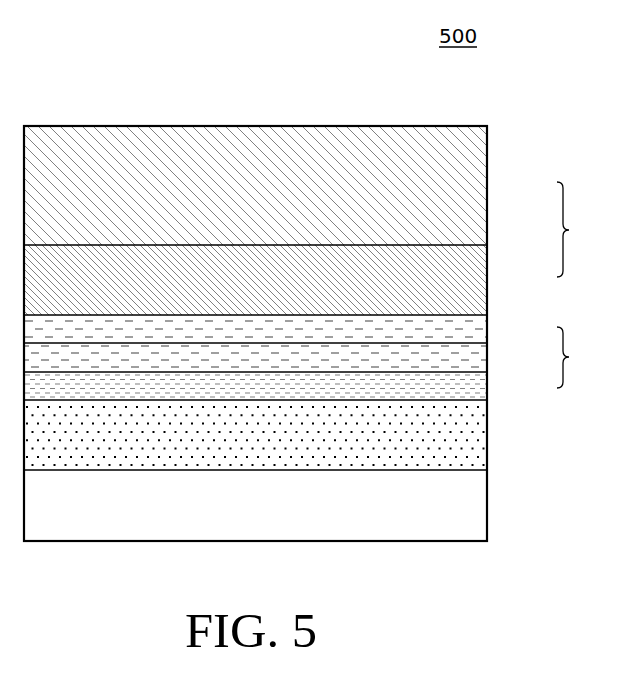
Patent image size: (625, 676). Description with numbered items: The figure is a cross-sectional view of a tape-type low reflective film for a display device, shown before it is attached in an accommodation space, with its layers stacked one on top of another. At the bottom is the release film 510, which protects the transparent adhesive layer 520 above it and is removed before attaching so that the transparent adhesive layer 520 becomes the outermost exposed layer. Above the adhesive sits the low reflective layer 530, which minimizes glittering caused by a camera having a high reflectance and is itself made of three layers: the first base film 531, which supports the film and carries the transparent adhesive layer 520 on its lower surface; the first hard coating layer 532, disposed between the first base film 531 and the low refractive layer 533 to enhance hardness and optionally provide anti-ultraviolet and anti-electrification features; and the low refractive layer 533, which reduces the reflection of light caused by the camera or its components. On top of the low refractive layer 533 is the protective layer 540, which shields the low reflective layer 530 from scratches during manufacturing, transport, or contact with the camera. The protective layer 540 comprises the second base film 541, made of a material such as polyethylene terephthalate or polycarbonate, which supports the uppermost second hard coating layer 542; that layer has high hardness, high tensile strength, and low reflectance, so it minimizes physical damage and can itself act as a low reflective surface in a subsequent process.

The release film 510 is at (462, 507).
The transparent adhesive layer 520 is at (462, 441).
The low reflective layer 530 is at (585, 357).
The first base film 531 is at (462, 390).
The first hard coating layer 532 is at (462, 360).
The low refractive layer 533 is at (462, 329).
The protective layer 540 is at (585, 229).
The second base film 541 is at (462, 282).
The second hard coating layer 542 is at (462, 190).